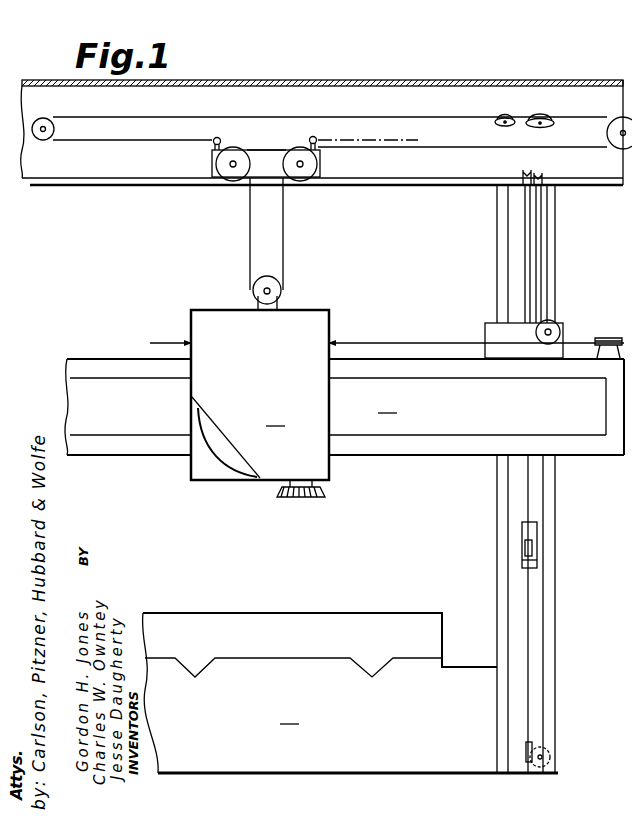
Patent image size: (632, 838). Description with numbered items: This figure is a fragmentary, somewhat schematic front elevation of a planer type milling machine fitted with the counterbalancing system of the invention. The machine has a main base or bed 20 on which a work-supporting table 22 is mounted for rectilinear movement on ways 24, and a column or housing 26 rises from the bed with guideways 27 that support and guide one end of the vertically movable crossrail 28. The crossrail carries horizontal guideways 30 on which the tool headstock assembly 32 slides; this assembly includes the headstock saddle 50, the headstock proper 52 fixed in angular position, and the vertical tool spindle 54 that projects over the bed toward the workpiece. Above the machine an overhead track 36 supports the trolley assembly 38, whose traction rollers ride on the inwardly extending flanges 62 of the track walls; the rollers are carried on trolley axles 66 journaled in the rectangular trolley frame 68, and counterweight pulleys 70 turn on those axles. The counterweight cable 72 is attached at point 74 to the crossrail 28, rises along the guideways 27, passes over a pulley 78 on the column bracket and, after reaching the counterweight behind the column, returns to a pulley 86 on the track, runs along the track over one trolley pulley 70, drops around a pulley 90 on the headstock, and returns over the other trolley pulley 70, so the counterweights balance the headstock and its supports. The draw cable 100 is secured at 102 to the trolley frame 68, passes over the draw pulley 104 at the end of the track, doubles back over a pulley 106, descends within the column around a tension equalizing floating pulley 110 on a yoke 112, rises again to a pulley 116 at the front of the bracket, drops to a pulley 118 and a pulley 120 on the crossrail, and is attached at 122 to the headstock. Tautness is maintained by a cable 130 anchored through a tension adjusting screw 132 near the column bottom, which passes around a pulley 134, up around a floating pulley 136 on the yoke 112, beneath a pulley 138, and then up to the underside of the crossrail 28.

The main base or bed 20 is at (292, 693).
The work-supporting table 22 is at (323, 621).
The ways 24 is at (378, 666).
The column or housing 26 is at (556, 641).
The guideways 27 is at (503, 688).
The crossrail 28 is at (344, 407).
The horizontal guideways 30 is at (439, 372).
The tool headstock assembly 32 is at (260, 395).
The overhead track 36 is at (401, 79).
The trolley assembly 38 is at (267, 187).
The headstock saddle 50 is at (212, 476).
The headstock proper 52 is at (329, 480).
The tool spindle 54 is at (306, 498).
The inwardly extending flanges 62 is at (413, 190).
The trolley axle 66 is at (232, 170).
The trolley frame 68 is at (212, 160).
The counterweight pulleys 70 is at (299, 153).
The cable 72 is at (249, 246).
The attachment point 74 is at (527, 356).
The pulley 78 is at (523, 196).
The pulley 86 is at (537, 117).
The pulley 90 is at (281, 286).
The cable 100 is at (393, 342).
The attachment point 102 is at (221, 139).
The draw pulley 104 is at (50, 121).
The pulley 106 is at (505, 116).
The tension equalizing floating pulley 110 is at (531, 522).
The yoke 112 is at (536, 545).
The pulley 116 is at (542, 192).
The pulley 118 is at (552, 324).
The pulley 120 is at (606, 337).
The attachment point 122 is at (333, 341).
The cable 130 is at (531, 605).
The tension adjusting screw 132 is at (558, 772).
The pulley 134 is at (533, 771).
The tension equalizing floating pulley 136 is at (530, 565).
The pulley 138 is at (531, 744).